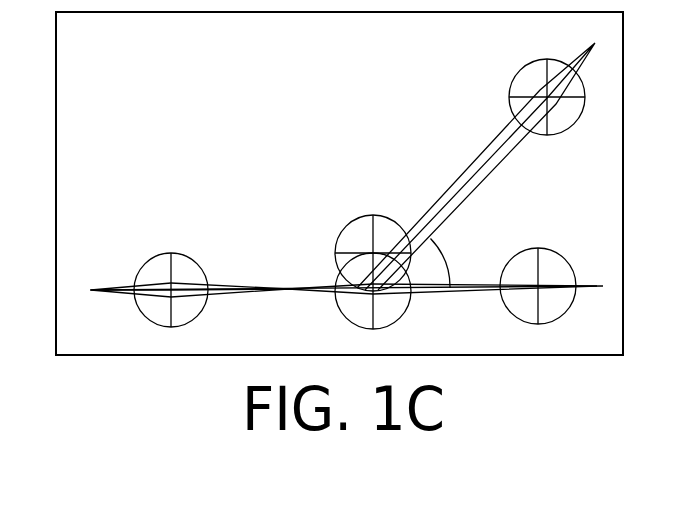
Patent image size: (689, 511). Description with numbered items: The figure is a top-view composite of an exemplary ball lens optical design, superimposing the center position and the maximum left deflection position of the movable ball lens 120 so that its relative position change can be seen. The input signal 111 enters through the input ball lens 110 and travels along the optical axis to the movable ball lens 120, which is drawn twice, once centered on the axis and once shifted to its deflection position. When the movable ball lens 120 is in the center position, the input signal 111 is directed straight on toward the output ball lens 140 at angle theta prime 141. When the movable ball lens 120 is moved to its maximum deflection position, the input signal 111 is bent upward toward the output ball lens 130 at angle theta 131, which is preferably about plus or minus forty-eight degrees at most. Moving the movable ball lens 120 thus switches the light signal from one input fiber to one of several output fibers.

The input ball lens 110 is at (170, 252).
The input signal 111 is at (104, 283).
The movable ball lens 120 is at (352, 222).
The output ball lens 130 is at (510, 80).
The angle theta 131 is at (447, 250).
The output ball lens 140 is at (538, 248).
The angle theta prime 141 is at (433, 318).